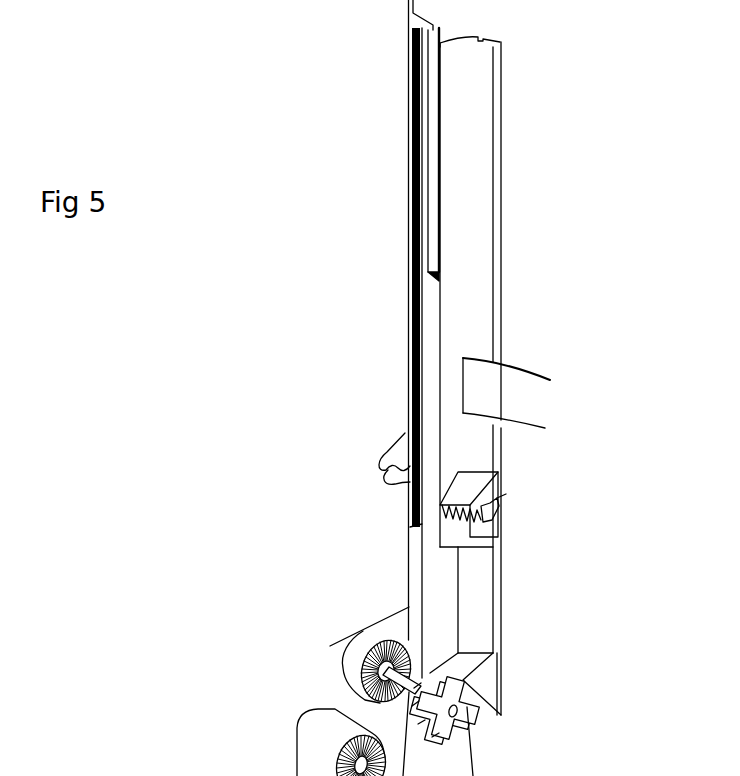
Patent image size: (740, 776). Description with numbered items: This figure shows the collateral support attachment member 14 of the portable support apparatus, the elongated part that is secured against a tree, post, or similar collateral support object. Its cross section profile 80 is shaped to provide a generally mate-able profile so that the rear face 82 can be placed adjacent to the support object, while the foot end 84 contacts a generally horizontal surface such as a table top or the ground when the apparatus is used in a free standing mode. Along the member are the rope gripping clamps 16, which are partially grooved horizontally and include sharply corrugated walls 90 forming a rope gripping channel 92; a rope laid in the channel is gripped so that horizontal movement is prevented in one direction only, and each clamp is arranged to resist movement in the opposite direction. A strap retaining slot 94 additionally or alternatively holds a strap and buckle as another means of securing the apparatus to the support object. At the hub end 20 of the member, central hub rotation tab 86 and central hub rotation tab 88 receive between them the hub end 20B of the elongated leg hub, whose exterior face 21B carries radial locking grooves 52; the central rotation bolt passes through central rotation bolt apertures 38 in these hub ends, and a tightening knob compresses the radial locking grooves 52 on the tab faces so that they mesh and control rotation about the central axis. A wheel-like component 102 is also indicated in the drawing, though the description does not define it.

The collateral support attachment member 14 is at (462, 262).
The rope gripping clamps 16 is at (405, 452).
The hub end 20 is at (409, 605).
The hub end 20B is at (317, 745).
The exterior face 21B is at (308, 728).
The central rotation bolt apertures 38 is at (455, 717).
The radial locking grooves 52 is at (360, 684).
The cross section profile 80 is at (413, 15).
The rear face 82 is at (480, 38).
The foot end 84 is at (466, 127).
The central hub rotation tab 86 is at (382, 636).
The central hub rotation tab 88 is at (487, 707).
The sharply corrugated walls 90 is at (470, 530).
The rope gripping channel 92 is at (442, 519).
The strap retaining slot 94 is at (463, 377).
The wheel 102 is at (267, 757).